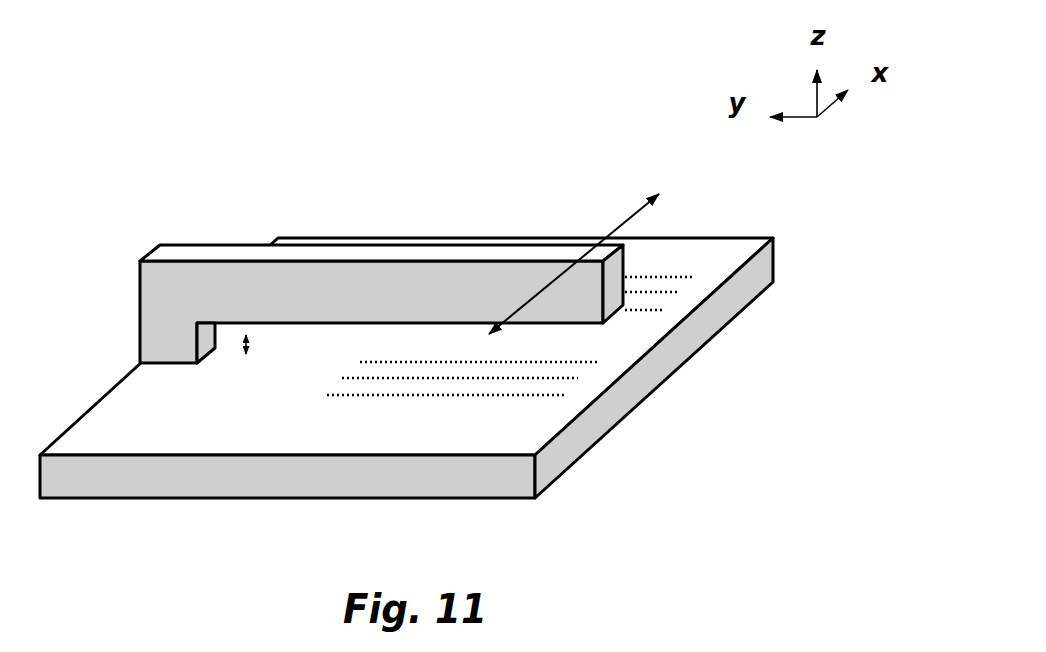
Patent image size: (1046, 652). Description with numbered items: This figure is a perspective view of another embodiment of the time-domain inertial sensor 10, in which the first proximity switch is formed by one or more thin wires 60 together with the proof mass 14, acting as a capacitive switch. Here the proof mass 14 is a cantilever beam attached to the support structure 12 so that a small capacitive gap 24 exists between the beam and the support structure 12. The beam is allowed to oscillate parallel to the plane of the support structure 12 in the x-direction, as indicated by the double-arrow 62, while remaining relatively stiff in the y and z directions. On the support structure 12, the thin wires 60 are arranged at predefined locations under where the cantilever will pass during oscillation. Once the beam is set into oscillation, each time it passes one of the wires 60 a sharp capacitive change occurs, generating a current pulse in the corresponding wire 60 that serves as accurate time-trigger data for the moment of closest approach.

The time-domain inertial sensor 10 is at (148, 145).
The support structure 12 is at (238, 499).
The proof mass 14 is at (627, 263).
The gap 24 is at (250, 338).
The thin wires 60 is at (567, 395).
The double-arrow 62 is at (627, 210).